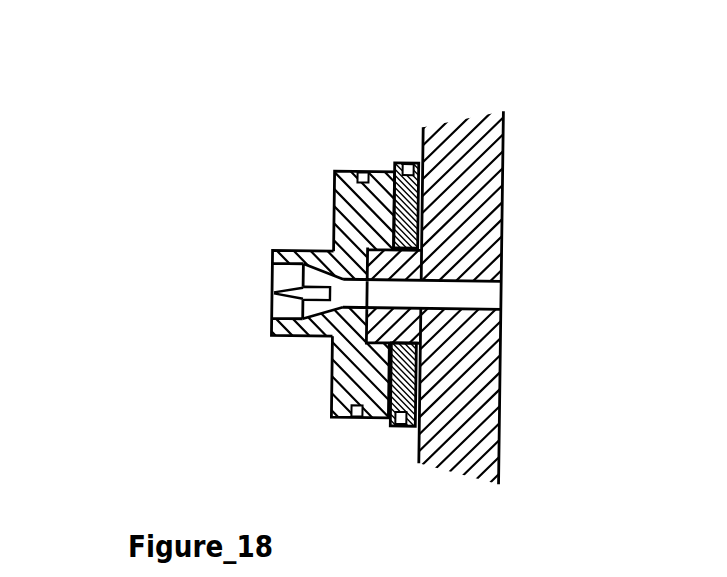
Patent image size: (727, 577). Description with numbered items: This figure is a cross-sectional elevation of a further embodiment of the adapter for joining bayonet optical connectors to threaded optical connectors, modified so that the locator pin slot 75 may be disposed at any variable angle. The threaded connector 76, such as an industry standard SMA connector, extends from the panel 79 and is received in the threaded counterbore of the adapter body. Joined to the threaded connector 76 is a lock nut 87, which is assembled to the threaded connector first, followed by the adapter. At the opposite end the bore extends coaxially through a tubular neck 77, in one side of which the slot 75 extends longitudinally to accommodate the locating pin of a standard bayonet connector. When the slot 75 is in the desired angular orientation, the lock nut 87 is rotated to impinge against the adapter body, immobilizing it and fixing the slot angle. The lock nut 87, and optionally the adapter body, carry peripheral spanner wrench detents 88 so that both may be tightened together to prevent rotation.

The slot 75 is at (273, 292).
The threaded connector 76 is at (335, 236).
The neck 77 is at (270, 253).
The panel 79 is at (459, 136).
The lock nut 87 is at (335, 172).
The spanner wrench detents 88 is at (405, 163).